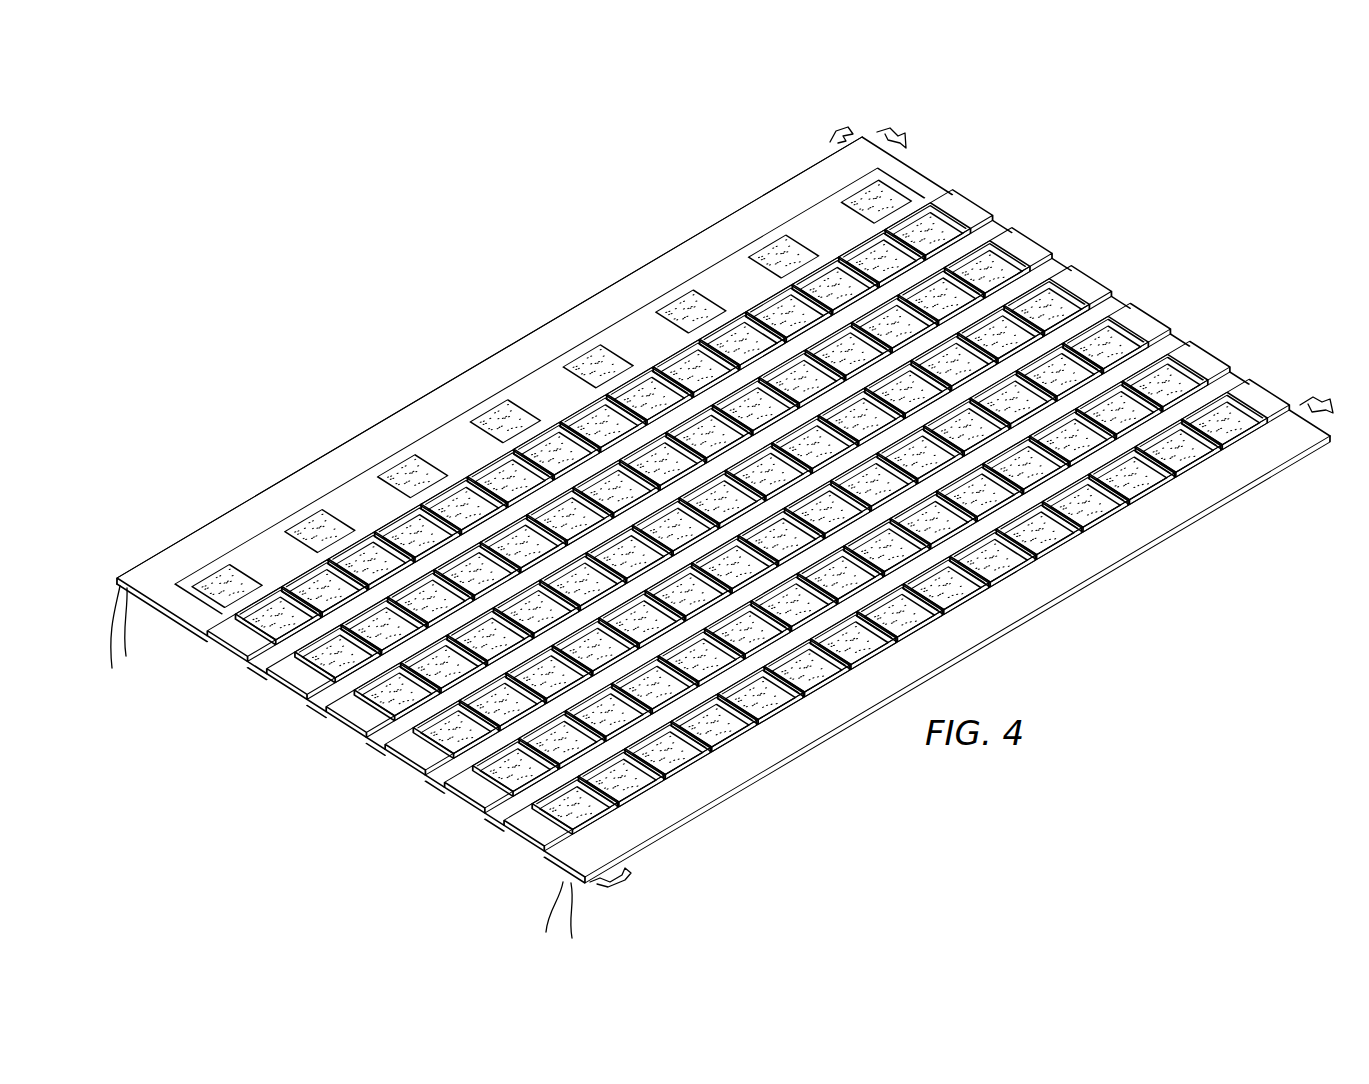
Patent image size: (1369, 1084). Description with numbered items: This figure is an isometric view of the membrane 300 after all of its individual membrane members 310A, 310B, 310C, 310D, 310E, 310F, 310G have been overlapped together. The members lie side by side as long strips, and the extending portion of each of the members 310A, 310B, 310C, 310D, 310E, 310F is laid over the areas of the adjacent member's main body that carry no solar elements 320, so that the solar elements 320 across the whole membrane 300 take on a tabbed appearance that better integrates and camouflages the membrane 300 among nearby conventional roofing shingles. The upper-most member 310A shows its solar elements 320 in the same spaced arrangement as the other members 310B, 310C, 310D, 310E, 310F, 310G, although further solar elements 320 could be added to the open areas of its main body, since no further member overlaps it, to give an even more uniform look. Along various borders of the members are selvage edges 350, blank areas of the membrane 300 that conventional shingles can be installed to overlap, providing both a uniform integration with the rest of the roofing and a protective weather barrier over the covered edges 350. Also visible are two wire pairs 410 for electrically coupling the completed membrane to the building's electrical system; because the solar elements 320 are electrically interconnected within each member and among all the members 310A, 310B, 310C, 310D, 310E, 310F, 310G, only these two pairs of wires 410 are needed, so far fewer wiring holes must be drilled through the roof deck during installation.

The membrane 300 is at (455, 286).
The membrane member 310A is at (216, 516).
The membrane member 310B is at (1000, 225).
The membrane member 310C is at (294, 698).
The membrane member 310D is at (1113, 300).
The membrane member 310E is at (398, 768).
The membrane member 310F is at (457, 808).
The membrane member 310G is at (1255, 393).
The solar element 320 is at (690, 300).
The selvage edge 350 is at (978, 503).
The wire pair 410 is at (103, 660).